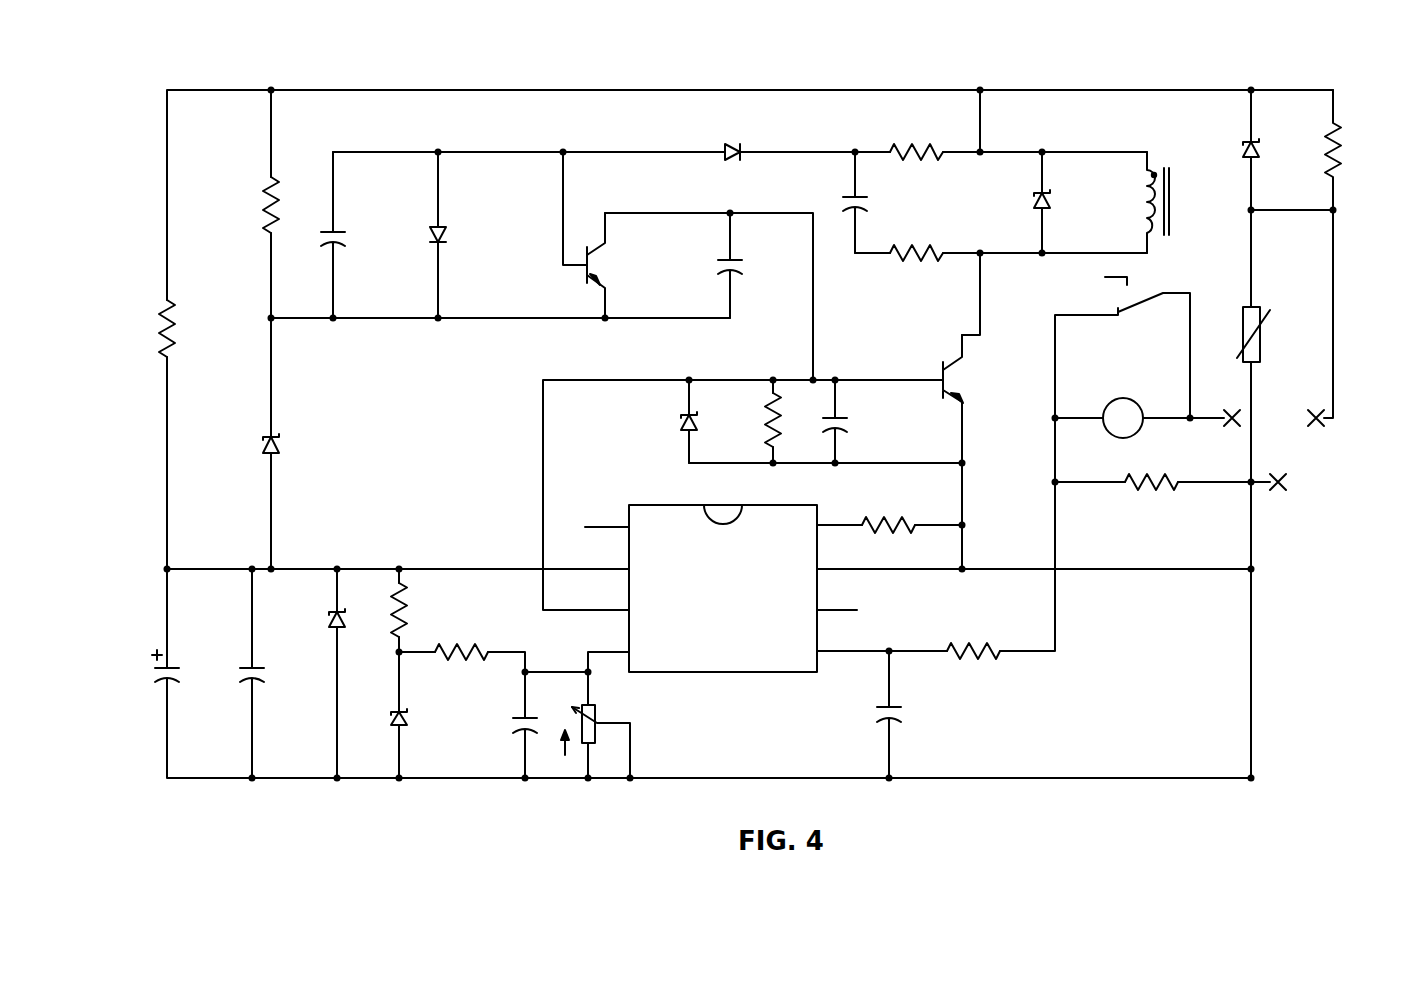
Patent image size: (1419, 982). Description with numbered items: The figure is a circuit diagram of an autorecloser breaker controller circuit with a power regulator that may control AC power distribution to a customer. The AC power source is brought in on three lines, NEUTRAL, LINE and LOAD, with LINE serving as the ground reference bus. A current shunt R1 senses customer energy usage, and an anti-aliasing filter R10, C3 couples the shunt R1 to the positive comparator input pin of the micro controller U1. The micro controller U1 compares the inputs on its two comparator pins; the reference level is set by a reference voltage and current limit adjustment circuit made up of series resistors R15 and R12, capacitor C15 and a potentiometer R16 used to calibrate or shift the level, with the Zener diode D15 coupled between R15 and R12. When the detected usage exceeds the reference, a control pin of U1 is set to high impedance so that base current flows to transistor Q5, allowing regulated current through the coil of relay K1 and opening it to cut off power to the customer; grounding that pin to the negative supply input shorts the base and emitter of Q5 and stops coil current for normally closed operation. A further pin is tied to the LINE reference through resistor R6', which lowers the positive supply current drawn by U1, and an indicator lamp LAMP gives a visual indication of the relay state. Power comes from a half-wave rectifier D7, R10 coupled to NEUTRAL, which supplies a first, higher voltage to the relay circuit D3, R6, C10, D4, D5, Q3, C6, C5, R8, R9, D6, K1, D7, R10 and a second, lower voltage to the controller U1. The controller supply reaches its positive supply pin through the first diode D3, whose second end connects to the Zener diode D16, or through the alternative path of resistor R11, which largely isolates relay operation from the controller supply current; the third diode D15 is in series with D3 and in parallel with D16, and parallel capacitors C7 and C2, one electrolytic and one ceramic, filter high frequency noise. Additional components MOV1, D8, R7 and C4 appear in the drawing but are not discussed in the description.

The resistor R11 is at (145, 328).
The resistor R6 is at (252, 205).
The first diode D3 is at (288, 446).
The capacitor C10 is at (356, 235).
The diode D4 is at (458, 235).
The transistor Q3 is at (604, 235).
The capacitor C6 is at (746, 265).
The diode D5 is at (732, 137).
The resistor R8 is at (916, 137).
The capacitor C5 is at (873, 202).
The resistor R9 is at (916, 266).
The diode D6 is at (1023, 202).
The relay K1 is at (1151, 285).
The half-wave rectifier diode D7 is at (1232, 198).
The resistor R10 is at (1169, 374).
The metal oxide varistor MOV1 is at (1236, 542).
The zener diode D8 is at (672, 421).
The resistor R7 is at (754, 421).
The capacitor C4 is at (851, 421).
The transistor Q5 is at (972, 369).
The micro controller U1 is at (722, 575).
The resistor R6' is at (888, 508).
The indicator lamp LAMP is at (1139, 387).
The load line LOAD is at (1210, 434).
The neutral line NEUTRAL is at (1346, 436).
The line LINE is at (1293, 498).
The current shunt R1 is at (1151, 496).
The capacitor C7 is at (144, 670).
The capacitor C2 is at (233, 673).
The second diode D16 is at (312, 673).
The resistor R15 is at (422, 610).
The third diode D15 is at (422, 715).
The resistor R12 is at (461, 670).
The capacitor C15 is at (502, 725).
The variable resistor R16 is at (617, 725).
The capacitor C3 is at (904, 714).